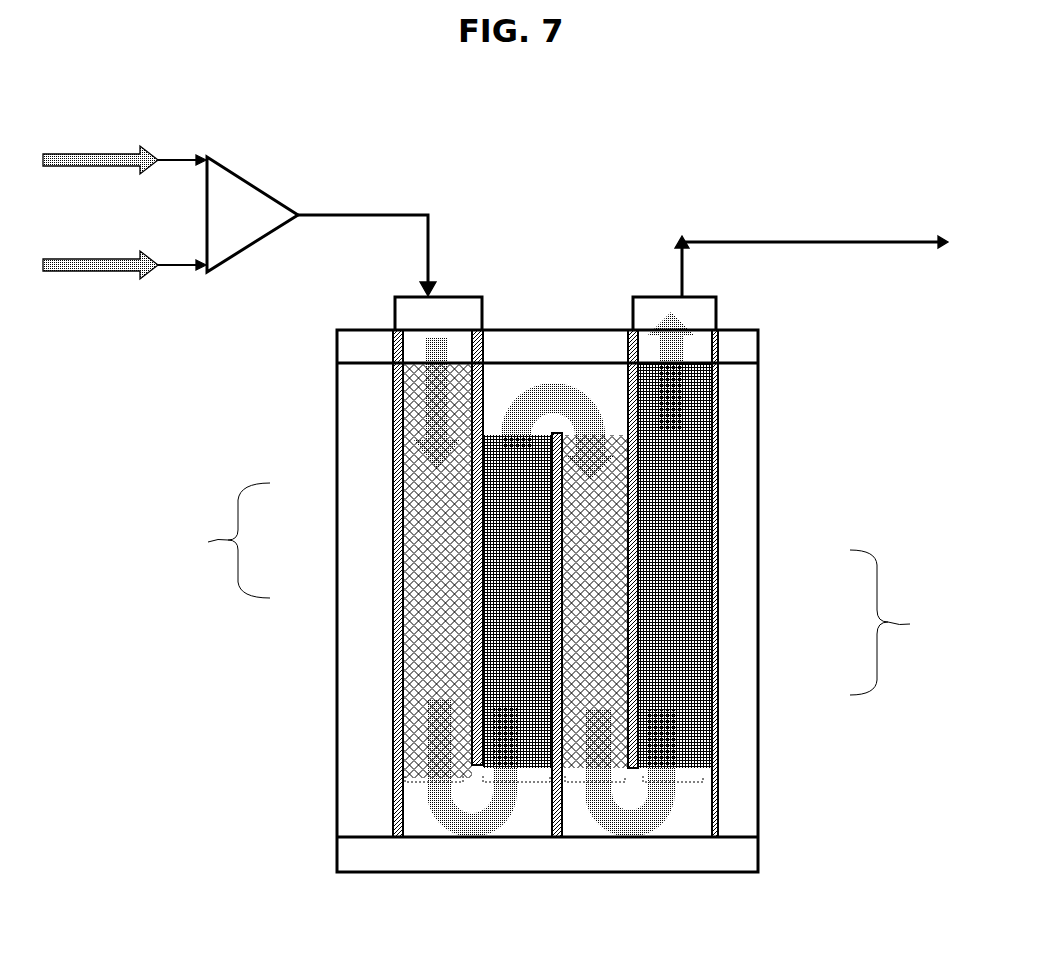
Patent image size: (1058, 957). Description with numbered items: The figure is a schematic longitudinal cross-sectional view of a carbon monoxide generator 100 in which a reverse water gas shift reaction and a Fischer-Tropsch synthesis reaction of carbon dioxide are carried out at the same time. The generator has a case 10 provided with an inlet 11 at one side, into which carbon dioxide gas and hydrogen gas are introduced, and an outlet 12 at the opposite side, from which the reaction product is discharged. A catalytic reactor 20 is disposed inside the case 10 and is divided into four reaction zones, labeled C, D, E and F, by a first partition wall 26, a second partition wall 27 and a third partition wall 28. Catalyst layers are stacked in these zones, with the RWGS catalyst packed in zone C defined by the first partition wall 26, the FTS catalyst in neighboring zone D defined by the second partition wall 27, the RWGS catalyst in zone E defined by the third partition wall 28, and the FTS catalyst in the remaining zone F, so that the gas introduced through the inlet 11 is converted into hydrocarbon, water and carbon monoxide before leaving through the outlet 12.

The carbon monoxide generator 100 is at (502, 509).
The case 10 is at (760, 510).
The catalytic reactor 20 is at (730, 438).
The inlet 11 is at (484, 318).
The outlet 12 is at (718, 308).
The first partition wall 26 is at (470, 652).
The second partition wall 27 is at (556, 700).
The third partition wall 28 is at (633, 752).